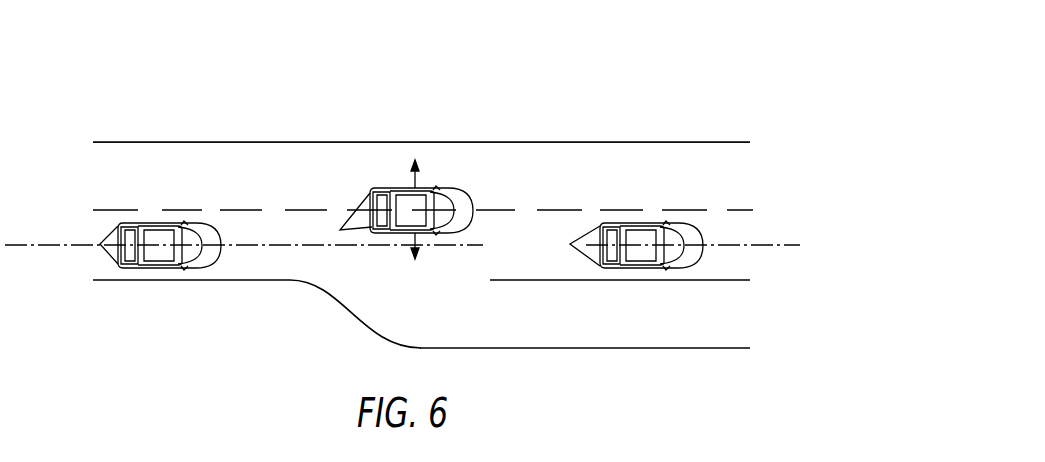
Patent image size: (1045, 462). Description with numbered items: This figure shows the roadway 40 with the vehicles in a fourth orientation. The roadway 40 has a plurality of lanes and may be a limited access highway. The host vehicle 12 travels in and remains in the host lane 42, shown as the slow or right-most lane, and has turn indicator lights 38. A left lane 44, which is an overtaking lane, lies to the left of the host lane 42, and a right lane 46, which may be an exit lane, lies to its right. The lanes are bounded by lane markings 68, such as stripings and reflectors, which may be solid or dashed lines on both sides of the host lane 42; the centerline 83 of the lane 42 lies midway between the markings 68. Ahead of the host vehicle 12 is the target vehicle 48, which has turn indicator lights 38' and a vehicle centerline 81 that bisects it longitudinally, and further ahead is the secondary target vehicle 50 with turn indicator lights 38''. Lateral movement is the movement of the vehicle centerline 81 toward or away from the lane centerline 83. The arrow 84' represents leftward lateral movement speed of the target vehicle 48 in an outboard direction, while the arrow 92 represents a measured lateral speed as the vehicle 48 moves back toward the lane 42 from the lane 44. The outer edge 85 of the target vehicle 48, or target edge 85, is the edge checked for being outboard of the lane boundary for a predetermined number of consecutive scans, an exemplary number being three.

The vehicle 12 is at (163, 223).
The turn indicator lights 38 is at (89, 245).
The turn indicator lights 38' is at (340, 217).
The turn indicator lights 38'' is at (566, 246).
The roadway 40 is at (690, 141).
The host lane 42 is at (732, 233).
The left lane 44 is at (732, 178).
The right lane 46 is at (732, 320).
The target vehicle 48 is at (422, 236).
The secondary target vehicle 50 is at (650, 222).
The lane markings 68 is at (242, 279).
The vehicle centerline 81 is at (460, 208).
The centerline 83 is at (481, 248).
The arrow 84' is at (451, 150).
The outer edge 85 is at (410, 188).
The arrow 92 is at (413, 237).